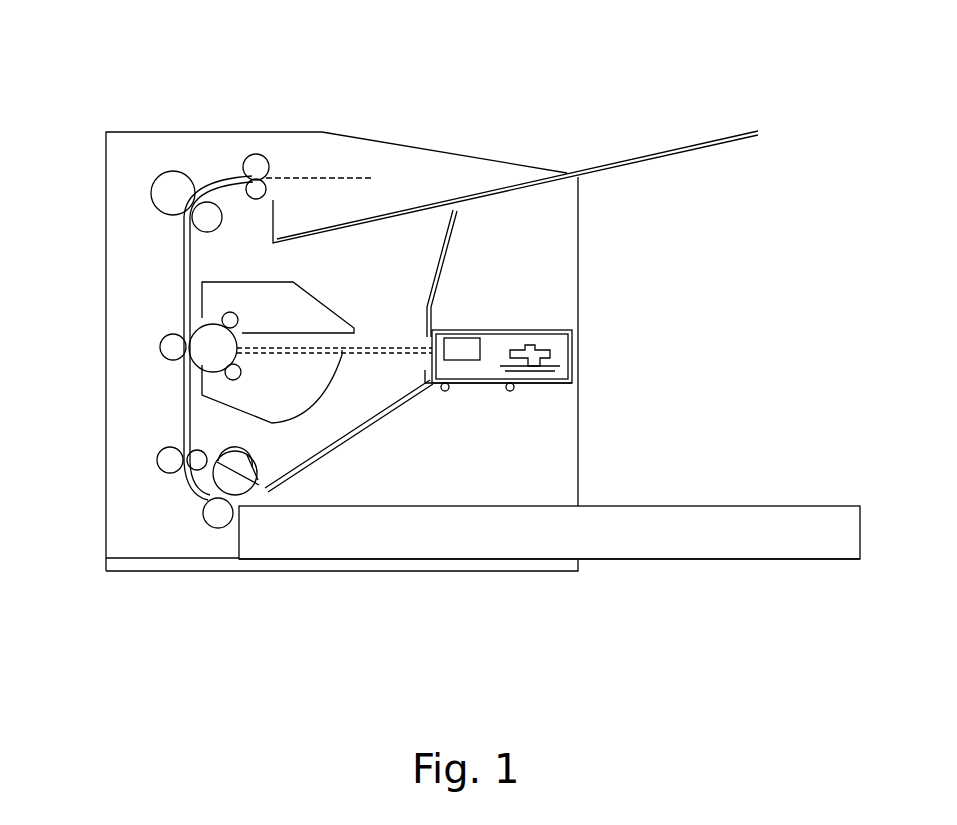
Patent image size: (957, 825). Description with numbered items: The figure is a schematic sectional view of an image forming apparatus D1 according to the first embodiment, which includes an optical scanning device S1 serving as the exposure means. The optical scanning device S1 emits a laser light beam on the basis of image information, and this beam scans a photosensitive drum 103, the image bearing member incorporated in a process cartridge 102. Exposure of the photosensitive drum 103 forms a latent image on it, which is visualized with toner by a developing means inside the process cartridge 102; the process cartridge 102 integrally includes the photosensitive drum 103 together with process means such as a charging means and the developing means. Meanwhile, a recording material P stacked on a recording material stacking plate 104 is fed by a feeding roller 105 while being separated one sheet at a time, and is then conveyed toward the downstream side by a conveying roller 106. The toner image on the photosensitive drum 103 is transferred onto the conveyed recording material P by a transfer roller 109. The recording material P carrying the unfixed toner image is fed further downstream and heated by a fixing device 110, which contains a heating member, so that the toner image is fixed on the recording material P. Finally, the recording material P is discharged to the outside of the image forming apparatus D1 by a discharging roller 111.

The image forming apparatus D1 is at (150, 143).
The fixing device 110 is at (170, 190).
The discharging roller 111 is at (257, 155).
The transfer roller 109 is at (173, 345).
The photosensitive drum 103 is at (212, 323).
The process cartridge 102 is at (323, 300).
The conveying roller 106 is at (173, 470).
The feeding roller 105 is at (257, 460).
The optical scanning device S1 is at (568, 340).
The recording material P is at (763, 505).
The recording material stacking plate 104 is at (623, 560).